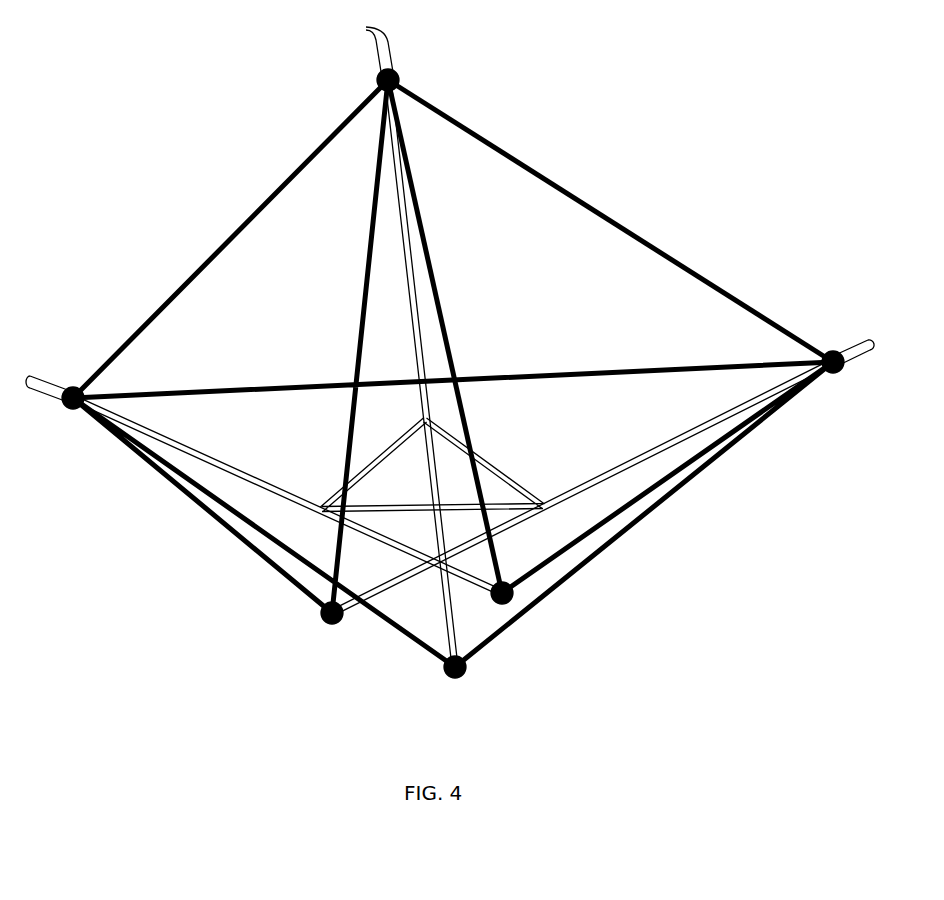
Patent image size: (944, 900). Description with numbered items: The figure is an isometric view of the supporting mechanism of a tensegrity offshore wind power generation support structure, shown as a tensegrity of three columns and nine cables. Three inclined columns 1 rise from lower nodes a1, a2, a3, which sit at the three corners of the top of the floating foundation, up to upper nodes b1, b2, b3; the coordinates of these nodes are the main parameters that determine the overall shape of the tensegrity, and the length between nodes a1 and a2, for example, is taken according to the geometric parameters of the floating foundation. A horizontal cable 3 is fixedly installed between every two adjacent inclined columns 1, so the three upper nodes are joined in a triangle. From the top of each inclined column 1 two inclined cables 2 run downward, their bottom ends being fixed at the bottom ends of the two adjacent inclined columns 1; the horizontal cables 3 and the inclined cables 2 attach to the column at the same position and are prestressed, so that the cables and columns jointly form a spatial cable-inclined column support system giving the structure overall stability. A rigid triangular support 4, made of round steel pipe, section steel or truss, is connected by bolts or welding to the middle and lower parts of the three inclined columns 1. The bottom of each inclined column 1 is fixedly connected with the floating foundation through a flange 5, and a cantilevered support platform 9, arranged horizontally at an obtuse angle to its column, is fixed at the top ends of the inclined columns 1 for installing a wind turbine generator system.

The inclined column 1 is at (630, 468).
The inclined cable 2 is at (446, 330).
The horizontal cable 3 is at (550, 178).
The rigid triangular support 4 is at (362, 476).
The flange 5 is at (826, 358).
The cantilevered support platform 9 is at (360, 40).
The node b1 is at (838, 393).
The node b2 is at (405, 59).
The node b3 is at (60, 430).
The node a1 is at (302, 636).
The node a2 is at (450, 699).
The node a3 is at (512, 561).